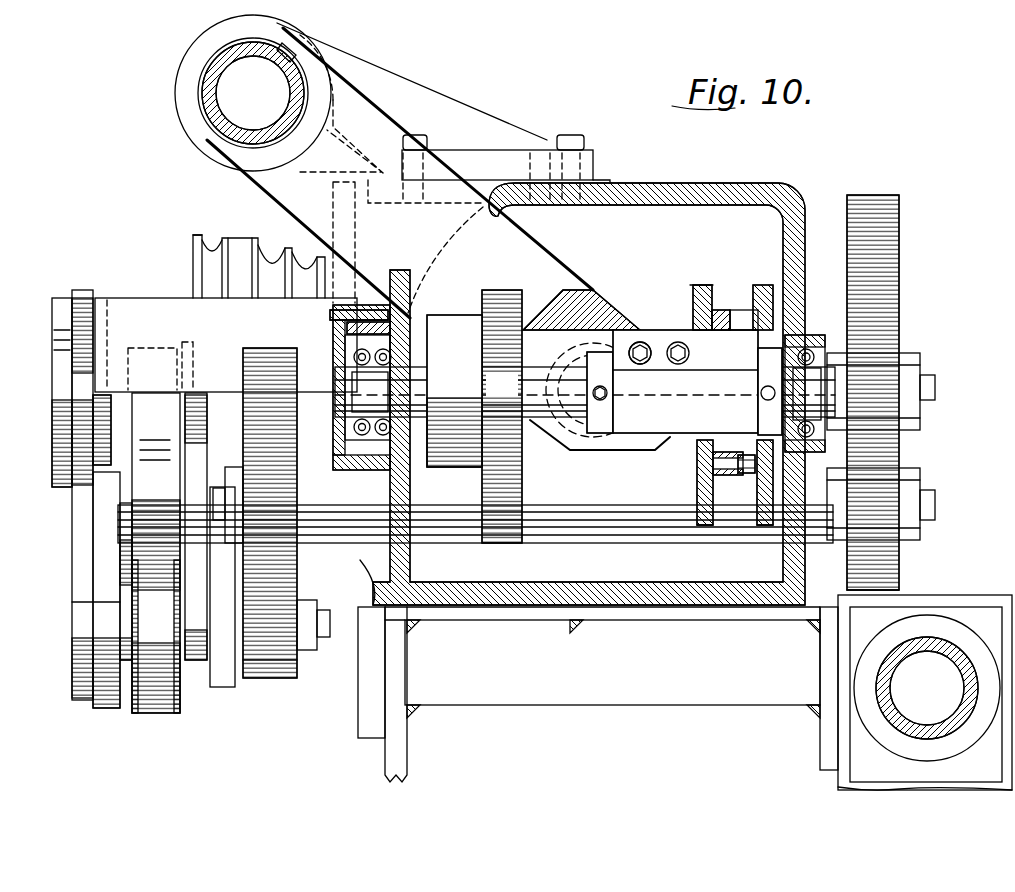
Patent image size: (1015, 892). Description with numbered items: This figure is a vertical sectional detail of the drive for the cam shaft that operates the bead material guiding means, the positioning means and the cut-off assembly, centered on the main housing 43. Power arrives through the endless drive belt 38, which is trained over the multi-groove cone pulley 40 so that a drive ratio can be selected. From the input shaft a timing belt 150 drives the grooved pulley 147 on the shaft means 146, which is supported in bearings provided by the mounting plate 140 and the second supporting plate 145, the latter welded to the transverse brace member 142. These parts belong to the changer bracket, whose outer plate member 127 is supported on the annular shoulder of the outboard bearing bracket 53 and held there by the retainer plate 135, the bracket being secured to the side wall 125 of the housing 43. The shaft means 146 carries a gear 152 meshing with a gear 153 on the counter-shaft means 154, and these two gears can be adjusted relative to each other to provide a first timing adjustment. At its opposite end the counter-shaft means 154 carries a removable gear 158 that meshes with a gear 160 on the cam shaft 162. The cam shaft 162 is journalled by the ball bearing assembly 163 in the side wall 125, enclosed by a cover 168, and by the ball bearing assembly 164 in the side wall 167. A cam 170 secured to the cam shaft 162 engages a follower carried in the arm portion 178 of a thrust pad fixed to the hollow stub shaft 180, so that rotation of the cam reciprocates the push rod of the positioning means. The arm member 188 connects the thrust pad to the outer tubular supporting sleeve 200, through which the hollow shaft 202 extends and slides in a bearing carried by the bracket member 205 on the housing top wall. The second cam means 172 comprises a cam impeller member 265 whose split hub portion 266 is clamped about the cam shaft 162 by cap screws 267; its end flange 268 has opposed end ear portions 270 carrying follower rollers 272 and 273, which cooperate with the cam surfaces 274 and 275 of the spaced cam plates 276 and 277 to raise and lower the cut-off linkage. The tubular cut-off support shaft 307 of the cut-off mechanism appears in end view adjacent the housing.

The outer tubular supporting sleeve 200 is at (210, 70).
The hollow shaft 202 is at (350, 43).
The bracket member 205 is at (498, 128).
The main housing 43 is at (705, 192).
The arm member 188 is at (280, 194).
The cone pulley 40 is at (212, 252).
The endless drive belt 38 is at (245, 242).
The cam 170 is at (493, 312).
The arm portion 178 is at (570, 330).
The cam surface 275 is at (673, 330).
The second cam means 172 is at (722, 280).
The cam impeller member 265 is at (670, 345).
The cap screw 267 is at (637, 343).
The end ear portion 270 is at (744, 305).
The follower roller 272 is at (772, 304).
The ball bearing assembly 164 is at (818, 330).
The gear 160 is at (900, 323).
The gear 153 is at (265, 358).
The cover 168 is at (340, 338).
The retainer plate 135 is at (60, 375).
The hollow stub shaft 180 is at (585, 416).
The end flange 268 is at (745, 343).
The outboard bearing bracket 53 is at (95, 440).
The cam shaft 162 is at (552, 415).
The cam surface 274 is at (860, 453).
The outer plate member 127 is at (80, 512).
The transverse brace member 142 is at (118, 522).
The mounting plate 140 is at (107, 545).
The ball bearing assembly 163 is at (400, 455).
The counter-shaft means 154 is at (605, 498).
The split hub portion 266 is at (650, 435).
The follower roller 273 is at (700, 458).
The side wall 125 is at (408, 557).
The cam plate 277 is at (700, 505).
The cam plate 276 is at (762, 515).
The side wall 167 is at (788, 548).
The gear 158 is at (900, 580).
The gear 152 is at (283, 678).
The grooved pulley 147 is at (130, 712).
The timing belt 150 is at (150, 712).
The shaft means 146 is at (196, 665).
The second supporting plate 145 is at (222, 678).
The tubular cut-off support shaft 307 is at (897, 718).